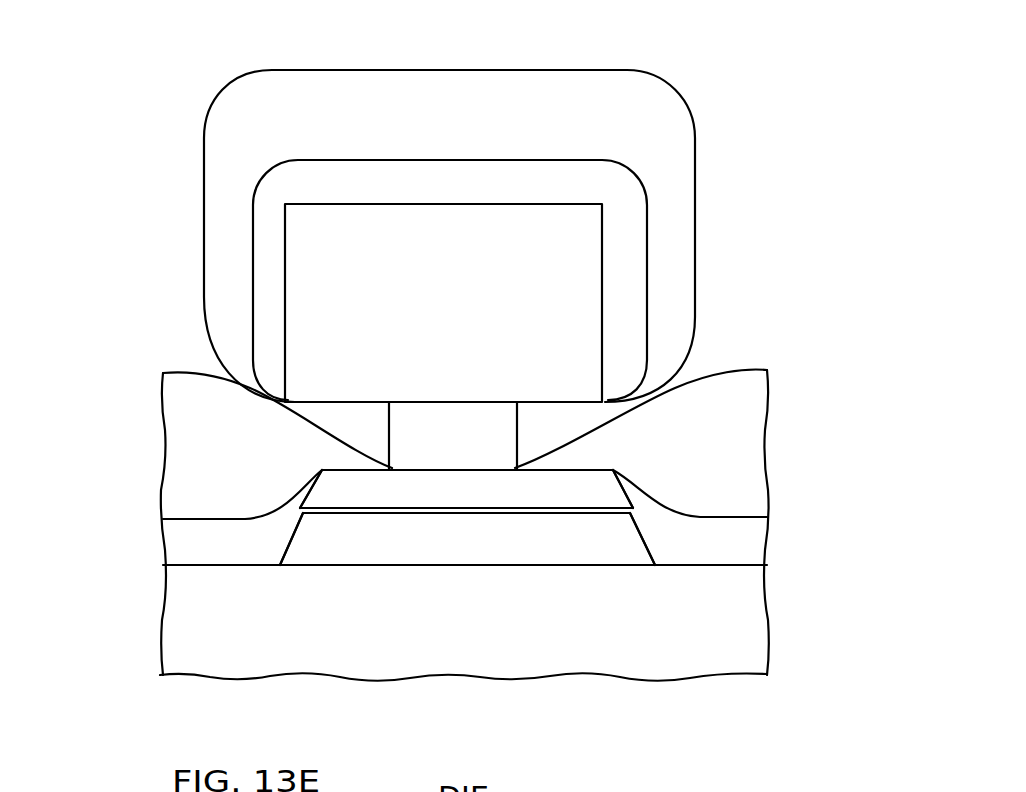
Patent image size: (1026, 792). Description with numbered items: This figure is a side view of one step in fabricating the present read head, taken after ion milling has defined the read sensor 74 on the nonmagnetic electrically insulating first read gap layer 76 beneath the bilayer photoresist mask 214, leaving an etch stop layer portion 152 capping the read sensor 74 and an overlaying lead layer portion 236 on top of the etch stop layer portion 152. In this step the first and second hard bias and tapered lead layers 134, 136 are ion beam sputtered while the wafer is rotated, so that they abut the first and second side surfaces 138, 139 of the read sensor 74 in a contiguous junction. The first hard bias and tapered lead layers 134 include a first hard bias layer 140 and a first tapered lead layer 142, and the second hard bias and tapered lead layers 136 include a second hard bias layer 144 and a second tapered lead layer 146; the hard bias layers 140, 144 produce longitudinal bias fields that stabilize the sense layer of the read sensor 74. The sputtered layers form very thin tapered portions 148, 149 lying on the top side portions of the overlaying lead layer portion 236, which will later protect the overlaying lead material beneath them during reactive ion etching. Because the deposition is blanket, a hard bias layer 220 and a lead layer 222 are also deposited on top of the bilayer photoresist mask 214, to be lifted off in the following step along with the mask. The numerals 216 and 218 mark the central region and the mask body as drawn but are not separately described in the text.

The lead layer 222 is at (593, 118).
The hard bias layer 220 is at (587, 187).
The mask 218 is at (593, 287).
The bilayer photoresist mask 214 is at (285, 247).
The opening / region between mask and overlayer 216 is at (465, 436).
The overlaying lead layer portion 236 is at (466, 489).
The first tapered lead layer 142 is at (163, 419).
The second tapered lead layer 146 is at (760, 422).
The first hard bias layer 140 is at (165, 538).
The second hard bias layer 144 is at (765, 543).
The first tapered portion 148 is at (358, 467).
The second tapered portion 149 is at (583, 467).
The read sensor 74 is at (585, 553).
The etch stop layer portion 152 is at (342, 513).
The first side surface 138 is at (272, 554).
The second side surface 139 is at (655, 548).
The first read gap layer 76 is at (190, 648).
The first hard bias and tapered lead layers 134 is at (113, 372).
The second hard bias and tapered lead layers 136 is at (830, 370).